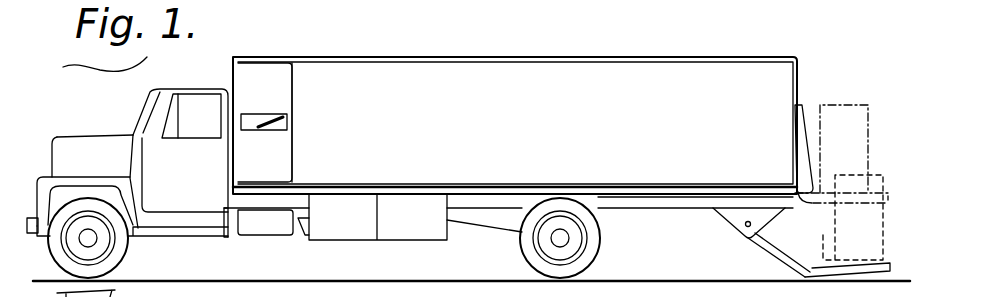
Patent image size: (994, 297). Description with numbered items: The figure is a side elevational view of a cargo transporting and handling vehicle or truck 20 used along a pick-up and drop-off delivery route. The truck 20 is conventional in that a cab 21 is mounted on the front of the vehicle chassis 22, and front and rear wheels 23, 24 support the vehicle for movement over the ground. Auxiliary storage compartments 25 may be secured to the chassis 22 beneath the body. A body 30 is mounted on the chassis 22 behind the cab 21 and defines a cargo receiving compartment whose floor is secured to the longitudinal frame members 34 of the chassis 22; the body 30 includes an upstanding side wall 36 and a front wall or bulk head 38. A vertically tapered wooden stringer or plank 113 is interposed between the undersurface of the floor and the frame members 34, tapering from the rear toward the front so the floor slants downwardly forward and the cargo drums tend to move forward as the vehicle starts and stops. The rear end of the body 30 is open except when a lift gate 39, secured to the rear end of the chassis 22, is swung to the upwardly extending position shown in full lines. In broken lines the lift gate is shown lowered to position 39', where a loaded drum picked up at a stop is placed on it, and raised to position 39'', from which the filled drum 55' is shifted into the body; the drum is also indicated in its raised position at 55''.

The cargo transporting and handling vehicle or truck 20 is at (100, 98).
The cab 21 is at (191, 88).
The front wall or bulk head 38 is at (232, 70).
The body 30 is at (607, 57).
The side wall 36 is at (518, 130).
The lift gate 39 is at (815, 125).
The raised broken line position of lift gate 39'' is at (835, 215).
The lowered broken line position of lift gate 39' is at (819, 254).
The container in raised position 55'' is at (856, 143).
The filled drum 55' is at (872, 217).
The vertically tapered stringer or plank 113 is at (702, 192).
The vehicle chassis 22 is at (662, 211).
The frame members 34 is at (637, 200).
The rear wheels 24 is at (590, 253).
The front wheels 23 is at (118, 252).
The auxiliary storage compartments 25 is at (337, 230).